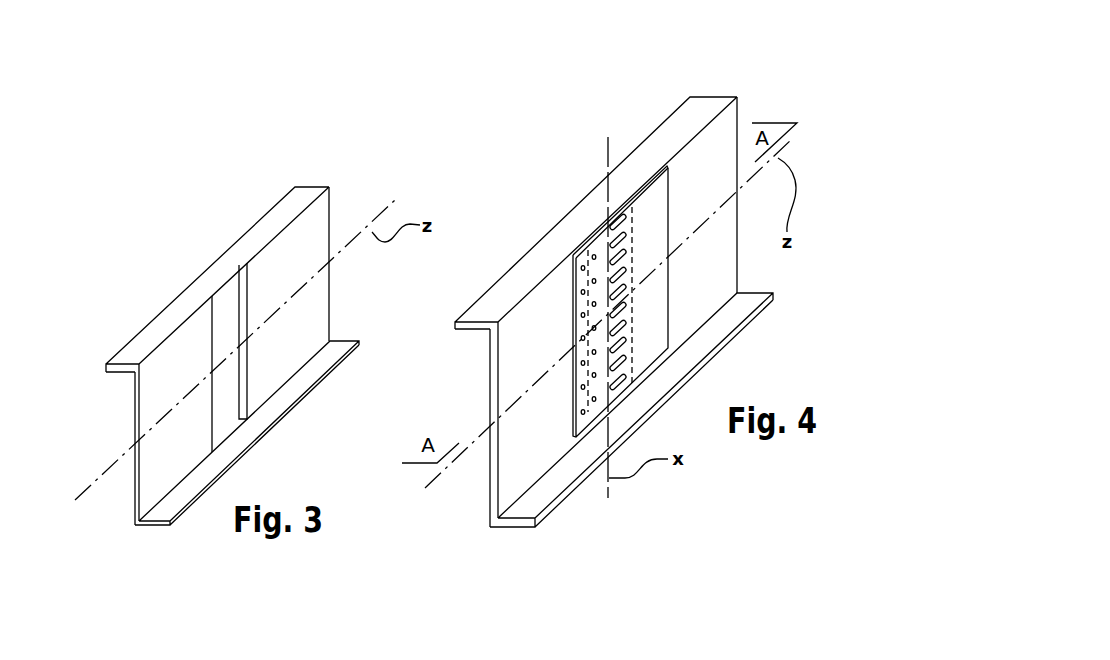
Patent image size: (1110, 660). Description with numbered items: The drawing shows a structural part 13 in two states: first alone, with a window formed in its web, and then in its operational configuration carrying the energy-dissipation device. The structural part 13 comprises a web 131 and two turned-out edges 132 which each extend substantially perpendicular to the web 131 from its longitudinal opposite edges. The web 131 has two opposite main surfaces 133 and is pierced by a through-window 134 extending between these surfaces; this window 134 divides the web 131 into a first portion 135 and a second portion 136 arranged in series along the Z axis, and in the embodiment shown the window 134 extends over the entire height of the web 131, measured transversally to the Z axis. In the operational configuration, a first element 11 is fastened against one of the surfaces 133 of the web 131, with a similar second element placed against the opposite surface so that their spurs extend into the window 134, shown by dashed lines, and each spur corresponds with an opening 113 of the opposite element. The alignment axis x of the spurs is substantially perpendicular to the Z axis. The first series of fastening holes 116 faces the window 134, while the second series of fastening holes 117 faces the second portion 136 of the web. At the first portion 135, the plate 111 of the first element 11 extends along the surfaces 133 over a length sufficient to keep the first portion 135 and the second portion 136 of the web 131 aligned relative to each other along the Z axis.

In FIG. 3, the structural part 13 is at (215, 247).
In FIG. 4, the structural part 13 is at (518, 237).
In FIG. 3, the web 131 is at (329, 204).
In FIG. 4, the web 131 is at (737, 267).
In FIG. 3, the turned-out edges 132 is at (141, 346).
In FIG. 4, the turned-out edges 132 is at (614, 312).
In FIG. 3, the main surfaces 133 is at (313, 298).
In FIG. 4, the main surfaces 133 is at (707, 157).
In FIG. 3, the through-window 134 is at (227, 392).
In FIG. 4, the through-window 134 is at (632, 348).
In FIG. 3, the first portion 135 is at (311, 230).
In FIG. 4, the first portion 135 is at (752, 195).
In FIG. 3, the second portion 136 is at (171, 444).
In FIG. 4, the second portion 136 is at (521, 424).
In FIG. 4, the first element 11 is at (575, 408).
In FIG. 4, the plate 111 is at (670, 292).
In FIG. 4, the opening 113 is at (630, 200).
In FIG. 4, the first series of fastening holes 116 is at (594, 255).
In FIG. 4, the second series of fastening holes 117 is at (583, 266).